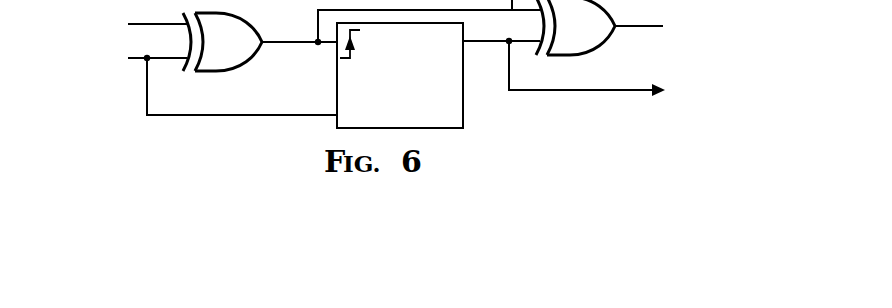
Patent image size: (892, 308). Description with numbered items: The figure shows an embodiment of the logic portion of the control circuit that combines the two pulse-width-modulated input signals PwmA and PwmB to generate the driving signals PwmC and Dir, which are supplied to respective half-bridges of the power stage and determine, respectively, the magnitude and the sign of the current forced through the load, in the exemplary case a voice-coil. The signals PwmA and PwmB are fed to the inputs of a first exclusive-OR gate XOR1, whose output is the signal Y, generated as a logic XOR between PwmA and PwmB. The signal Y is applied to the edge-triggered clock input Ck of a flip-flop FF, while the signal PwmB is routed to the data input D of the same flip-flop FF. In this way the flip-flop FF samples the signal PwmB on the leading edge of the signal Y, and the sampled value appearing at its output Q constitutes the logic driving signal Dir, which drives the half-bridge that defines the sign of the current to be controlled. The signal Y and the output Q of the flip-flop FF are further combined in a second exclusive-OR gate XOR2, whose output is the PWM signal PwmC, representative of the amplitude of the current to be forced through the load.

The PwmA signal PwmA is at (120, 17).
The PwmB signal PwmB is at (195, 76).
The XOR gate XOR1 is at (222, 42).
The signal Y is at (401, 22).
The flip-flop FF is at (435, 75).
The clock input Ck is at (366, 44).
The Q output Q is at (481, 44).
The D input D is at (354, 116).
The XOR gate XOR2 is at (575, 27).
The PwmC signal PwmC is at (678, 13).
The Dir signal Dir is at (608, 72).